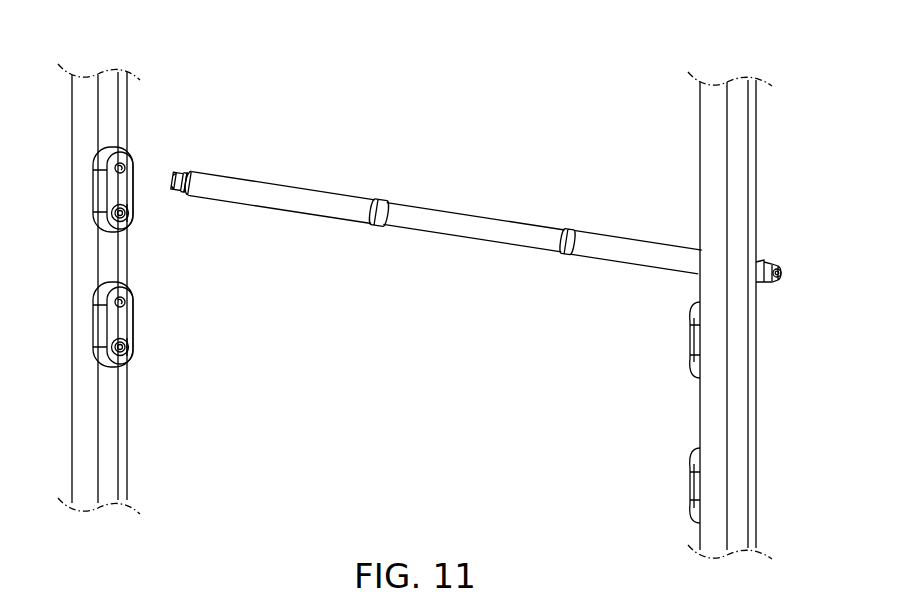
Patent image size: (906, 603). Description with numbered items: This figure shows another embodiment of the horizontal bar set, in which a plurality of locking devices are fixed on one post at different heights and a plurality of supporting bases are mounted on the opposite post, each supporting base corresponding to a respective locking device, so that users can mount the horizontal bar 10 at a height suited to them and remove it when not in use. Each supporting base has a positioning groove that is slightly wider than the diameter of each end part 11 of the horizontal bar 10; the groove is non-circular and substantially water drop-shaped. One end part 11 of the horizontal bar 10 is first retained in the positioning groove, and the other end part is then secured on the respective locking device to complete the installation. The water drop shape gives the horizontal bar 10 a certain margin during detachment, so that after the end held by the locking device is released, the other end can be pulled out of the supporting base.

The horizontal bar 10 is at (472, 215).
The end part 11 is at (180, 172).